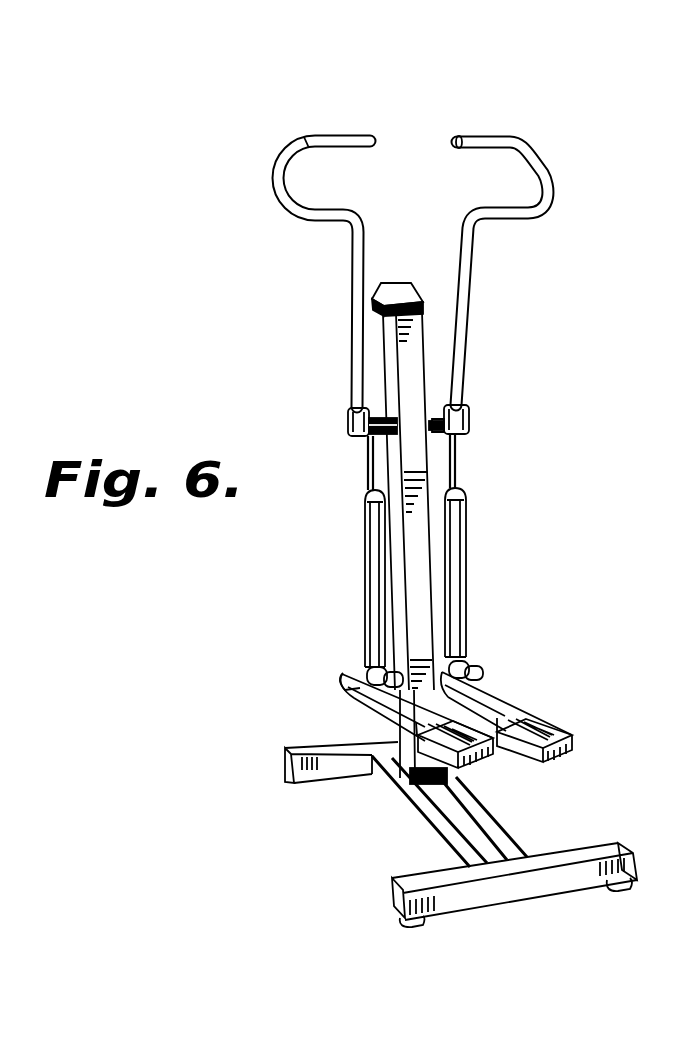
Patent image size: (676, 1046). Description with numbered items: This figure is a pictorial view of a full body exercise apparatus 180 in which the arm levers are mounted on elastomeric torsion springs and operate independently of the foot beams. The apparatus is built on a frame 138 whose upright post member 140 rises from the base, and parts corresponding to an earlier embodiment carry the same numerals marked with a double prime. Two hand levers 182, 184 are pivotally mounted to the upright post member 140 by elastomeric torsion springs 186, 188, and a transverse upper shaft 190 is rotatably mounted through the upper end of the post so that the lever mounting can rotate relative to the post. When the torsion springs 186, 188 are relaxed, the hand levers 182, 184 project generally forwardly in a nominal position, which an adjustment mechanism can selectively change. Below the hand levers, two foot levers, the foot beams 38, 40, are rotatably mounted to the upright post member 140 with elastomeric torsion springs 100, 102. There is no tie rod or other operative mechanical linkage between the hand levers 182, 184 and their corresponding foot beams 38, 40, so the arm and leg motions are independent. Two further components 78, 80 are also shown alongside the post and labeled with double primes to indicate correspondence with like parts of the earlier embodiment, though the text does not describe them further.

The full body exercise apparatus 180 is at (577, 528).
The hand lever 182 is at (307, 141).
The hand lever 184 is at (520, 138).
The upright post member 140 is at (415, 337).
The elastomeric torsion spring 186 is at (348, 428).
The elastomeric torsion spring 188 is at (470, 427).
The transverse upper shaft 190 is at (437, 420).
The left hydraulic cylinder 78 is at (370, 535).
The right hydraulic cylinder 80 is at (468, 593).
The elastomeric torsion spring 100 is at (352, 674).
The elastomeric torsion spring 102 is at (449, 655).
The foot beam 38 is at (370, 708).
The foot beam 40 is at (512, 689).
The frame 138 is at (388, 803).